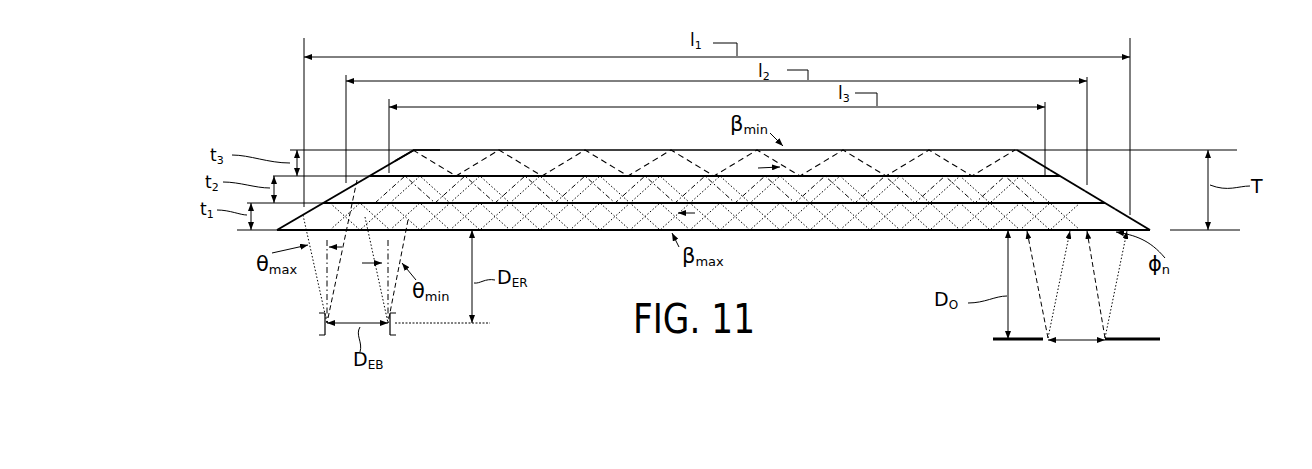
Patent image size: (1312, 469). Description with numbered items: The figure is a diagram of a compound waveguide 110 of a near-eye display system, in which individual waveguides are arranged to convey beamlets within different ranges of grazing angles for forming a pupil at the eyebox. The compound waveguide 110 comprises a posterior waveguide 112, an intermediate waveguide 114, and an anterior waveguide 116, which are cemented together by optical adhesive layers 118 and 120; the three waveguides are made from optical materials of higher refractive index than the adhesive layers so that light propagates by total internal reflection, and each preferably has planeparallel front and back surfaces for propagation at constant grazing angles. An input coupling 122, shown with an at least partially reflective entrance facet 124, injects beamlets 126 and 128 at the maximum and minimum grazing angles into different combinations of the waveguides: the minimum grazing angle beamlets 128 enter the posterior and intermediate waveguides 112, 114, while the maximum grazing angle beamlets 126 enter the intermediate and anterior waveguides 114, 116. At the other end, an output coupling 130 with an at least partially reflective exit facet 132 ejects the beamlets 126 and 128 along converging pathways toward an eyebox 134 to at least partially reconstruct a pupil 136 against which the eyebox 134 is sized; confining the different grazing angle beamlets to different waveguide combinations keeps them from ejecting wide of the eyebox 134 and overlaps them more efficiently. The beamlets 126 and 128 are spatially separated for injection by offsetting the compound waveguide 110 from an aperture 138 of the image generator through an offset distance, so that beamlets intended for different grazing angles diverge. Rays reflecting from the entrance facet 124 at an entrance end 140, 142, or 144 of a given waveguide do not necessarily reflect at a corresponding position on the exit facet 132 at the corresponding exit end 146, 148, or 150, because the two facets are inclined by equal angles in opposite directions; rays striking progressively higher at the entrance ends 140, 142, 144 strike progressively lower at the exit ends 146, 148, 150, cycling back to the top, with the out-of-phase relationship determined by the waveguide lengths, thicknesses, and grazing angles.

The compound waveguide 110 is at (613, 147).
The posterior waveguide 112 is at (885, 162).
The intermediate waveguide 114 is at (598, 197).
The anterior waveguide 116 is at (837, 223).
The optical adhesive layer 118 is at (525, 175).
The optical adhesive layer 120 is at (767, 205).
The input coupling 122 is at (1050, 163).
The entrance facet 124 is at (1027, 232).
The maximum grazing angle beamlets 126 is at (918, 195).
The minimum grazing angle beamlets 128 is at (690, 188).
The output coupling 130 is at (372, 168).
The exit facet 132 is at (387, 177).
The eyebox 134 is at (333, 326).
The pupil 136 is at (339, 355).
The aperture 138 is at (1102, 342).
The entrance end 140 is at (1035, 157).
The entrance end 142 is at (1080, 190).
The entrance end 144 is at (1120, 210).
The exit end 146 is at (404, 154).
The exit end 148 is at (357, 185).
The exit end 150 is at (300, 224).